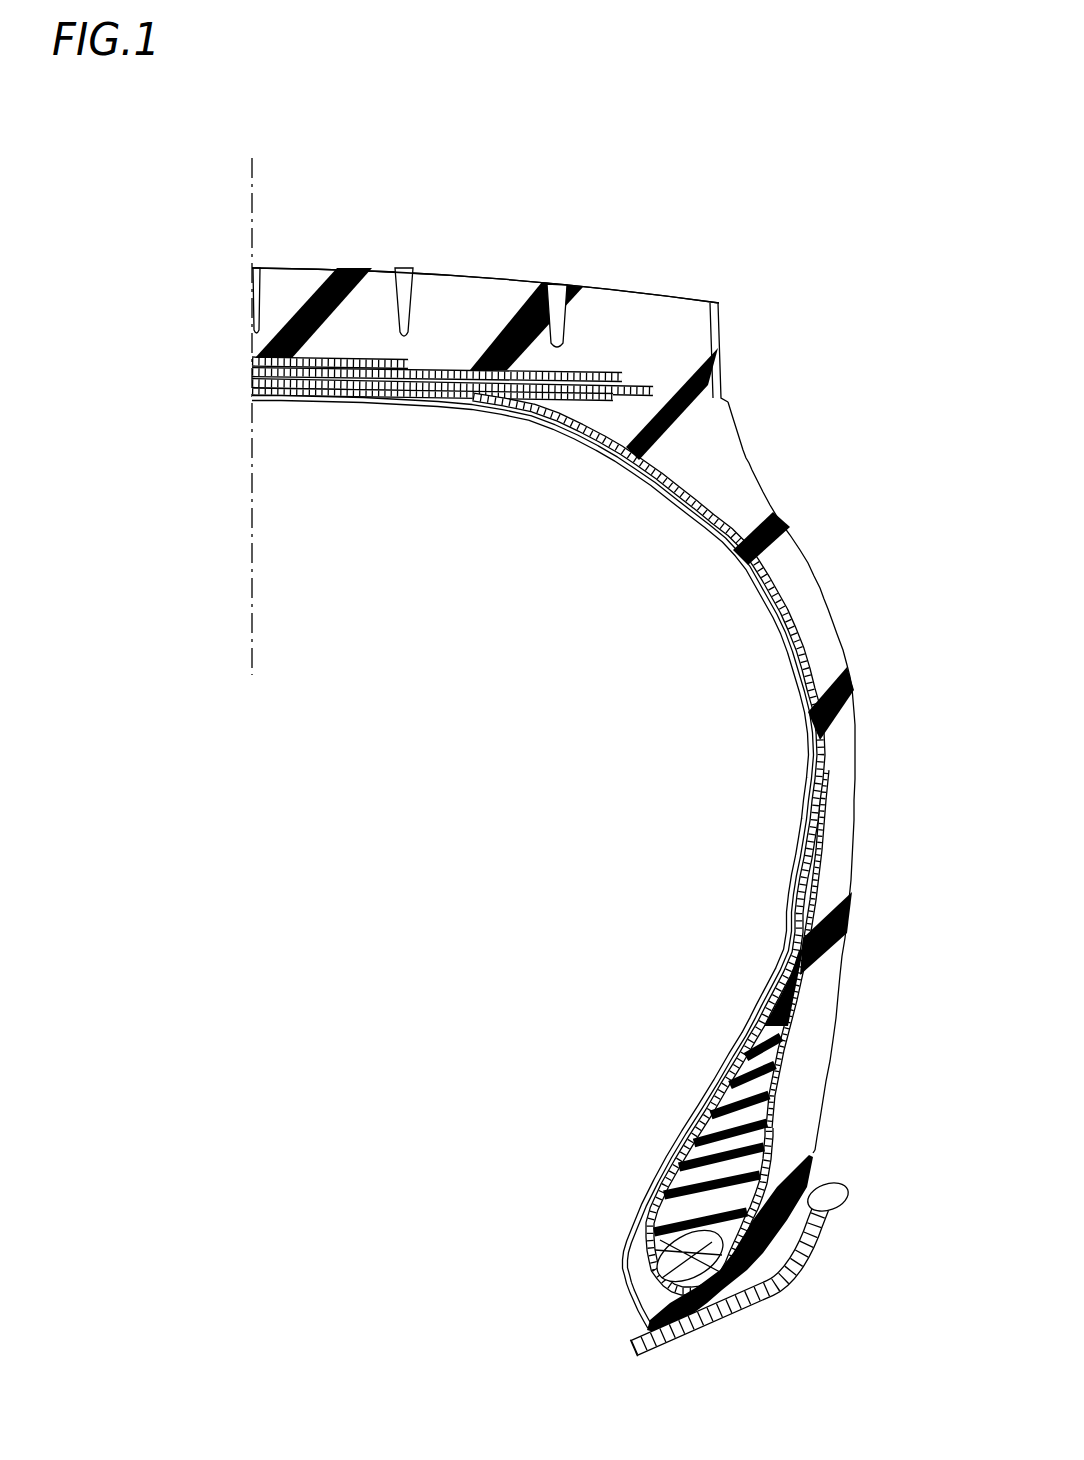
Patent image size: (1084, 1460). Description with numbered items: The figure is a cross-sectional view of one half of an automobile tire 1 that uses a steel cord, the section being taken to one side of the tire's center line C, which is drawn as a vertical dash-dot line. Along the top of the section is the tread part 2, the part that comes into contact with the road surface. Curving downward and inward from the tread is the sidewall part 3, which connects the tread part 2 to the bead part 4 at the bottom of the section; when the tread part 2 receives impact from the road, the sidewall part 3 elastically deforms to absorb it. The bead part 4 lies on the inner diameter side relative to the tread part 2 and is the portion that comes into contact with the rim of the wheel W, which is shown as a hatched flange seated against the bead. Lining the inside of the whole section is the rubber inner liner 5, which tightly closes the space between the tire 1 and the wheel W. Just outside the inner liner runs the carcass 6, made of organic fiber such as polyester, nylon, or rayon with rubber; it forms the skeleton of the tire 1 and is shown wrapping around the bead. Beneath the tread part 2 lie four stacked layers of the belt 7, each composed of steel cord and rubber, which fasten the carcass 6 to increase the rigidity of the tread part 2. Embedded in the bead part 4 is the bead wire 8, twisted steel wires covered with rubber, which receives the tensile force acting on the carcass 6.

The tire 1 is at (742, 215).
The tread part 2 is at (600, 238).
The sidewall part 3 is at (845, 567).
The bead part 4 is at (842, 1112).
The inner liner 5 is at (700, 520).
The carcass 6 is at (813, 786).
The belt 7 is at (254, 391).
The bead wire 8 is at (663, 1260).
The wheel W is at (767, 1287).
The tire equator centerline C is at (255, 401).